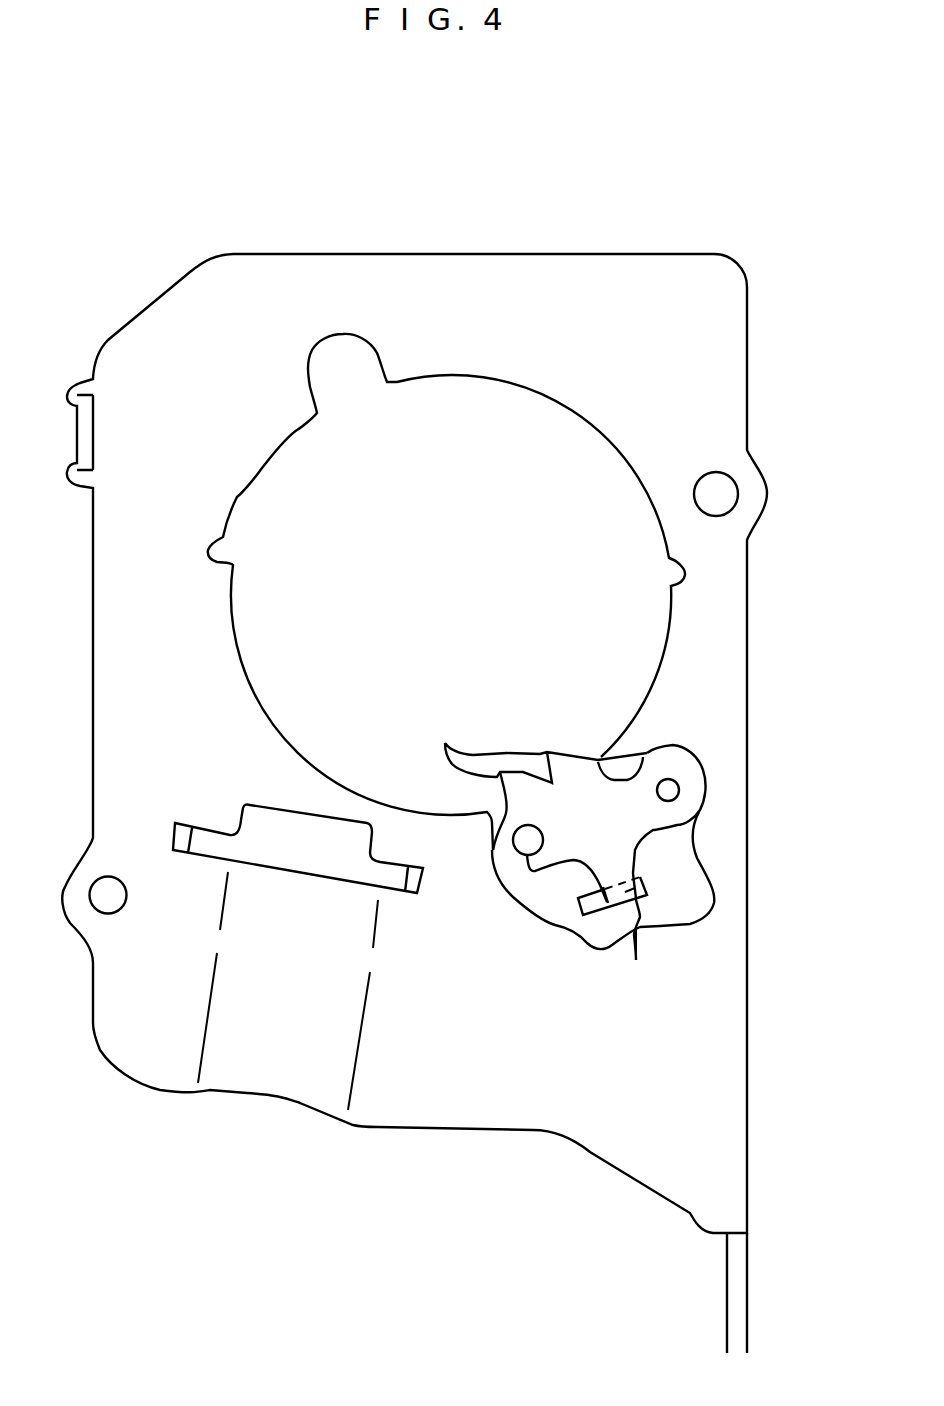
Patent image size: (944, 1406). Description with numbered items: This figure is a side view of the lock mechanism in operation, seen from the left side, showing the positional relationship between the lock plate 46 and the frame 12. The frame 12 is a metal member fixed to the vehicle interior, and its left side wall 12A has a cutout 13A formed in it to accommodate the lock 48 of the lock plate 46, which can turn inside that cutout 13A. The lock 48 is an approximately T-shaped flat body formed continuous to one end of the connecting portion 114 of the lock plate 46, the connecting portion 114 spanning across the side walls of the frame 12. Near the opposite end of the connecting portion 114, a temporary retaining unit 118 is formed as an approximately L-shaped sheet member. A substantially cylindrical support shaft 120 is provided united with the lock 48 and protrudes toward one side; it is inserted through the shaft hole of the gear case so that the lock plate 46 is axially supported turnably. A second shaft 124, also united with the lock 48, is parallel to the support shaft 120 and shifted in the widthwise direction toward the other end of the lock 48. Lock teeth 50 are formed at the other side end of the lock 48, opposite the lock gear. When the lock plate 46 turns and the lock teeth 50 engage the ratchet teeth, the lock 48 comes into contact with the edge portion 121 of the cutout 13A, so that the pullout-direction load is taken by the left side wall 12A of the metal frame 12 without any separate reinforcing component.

The frame 12 is at (517, 252).
The left side wall 12A is at (720, 343).
The cutout 13A is at (680, 763).
The lock plate 46 is at (535, 876).
The lock 48 is at (655, 818).
The lock teeth 50 is at (446, 744).
The connecting portion 114 is at (636, 962).
The temporary retaining unit 118 is at (558, 930).
The support shaft 120 is at (672, 789).
The edge portion 121 is at (596, 757).
The shaft 124 is at (523, 845).